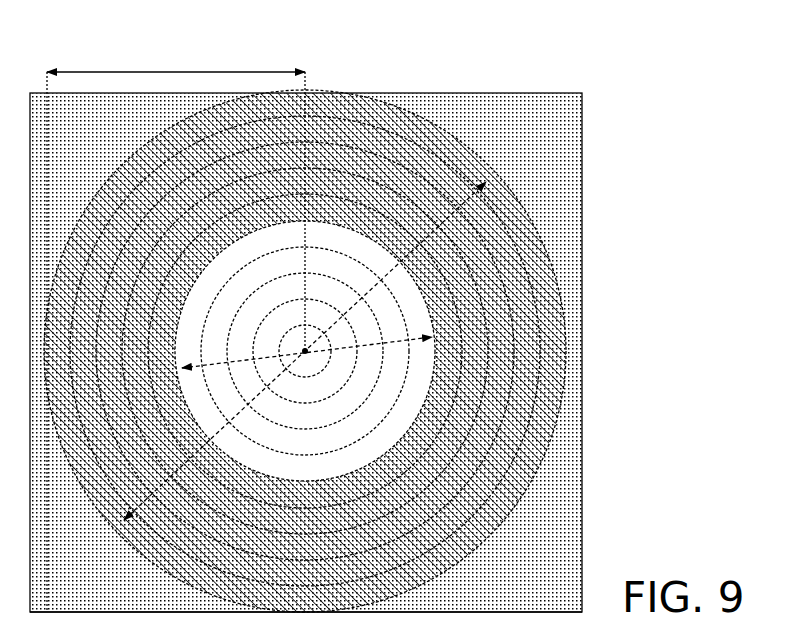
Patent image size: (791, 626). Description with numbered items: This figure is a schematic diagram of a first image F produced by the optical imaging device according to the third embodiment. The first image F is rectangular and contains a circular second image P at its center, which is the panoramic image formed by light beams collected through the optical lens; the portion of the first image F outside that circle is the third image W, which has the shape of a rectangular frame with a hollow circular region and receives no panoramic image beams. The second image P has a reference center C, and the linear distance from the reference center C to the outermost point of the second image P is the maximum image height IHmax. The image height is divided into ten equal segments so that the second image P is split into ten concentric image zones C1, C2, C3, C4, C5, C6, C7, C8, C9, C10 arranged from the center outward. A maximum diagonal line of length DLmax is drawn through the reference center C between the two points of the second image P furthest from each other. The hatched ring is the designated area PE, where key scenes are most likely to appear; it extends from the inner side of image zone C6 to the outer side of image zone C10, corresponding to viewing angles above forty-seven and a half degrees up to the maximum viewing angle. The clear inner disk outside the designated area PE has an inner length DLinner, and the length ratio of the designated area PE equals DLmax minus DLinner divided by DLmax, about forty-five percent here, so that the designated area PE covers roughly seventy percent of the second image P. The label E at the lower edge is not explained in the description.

The third image W is at (468, 122).
The second image P is at (395, 116).
The first image F is at (495, 50).
The designated area PE is at (318, 110).
The reference center C is at (307, 346).
The concentric image zone C1 is at (305, 353).
The concentric image zone C2 is at (305, 353).
The concentric image zone C3 is at (305, 353).
The concentric image zone C4 is at (305, 353).
The concentric image zone C5 is at (305, 353).
The concentric image zone C6 is at (305, 352).
The concentric image zone C7 is at (305, 352).
The concentric image zone C8 is at (305, 352).
The concentric image zone C9 is at (305, 352).
The concentric image zone C10 is at (305, 352).
The maximum image height IHmax is at (176, 328).
The maximum diagonal length DLmax is at (483, 184).
The inner length DLinner is at (318, 338).
The edge E is at (306, 619).